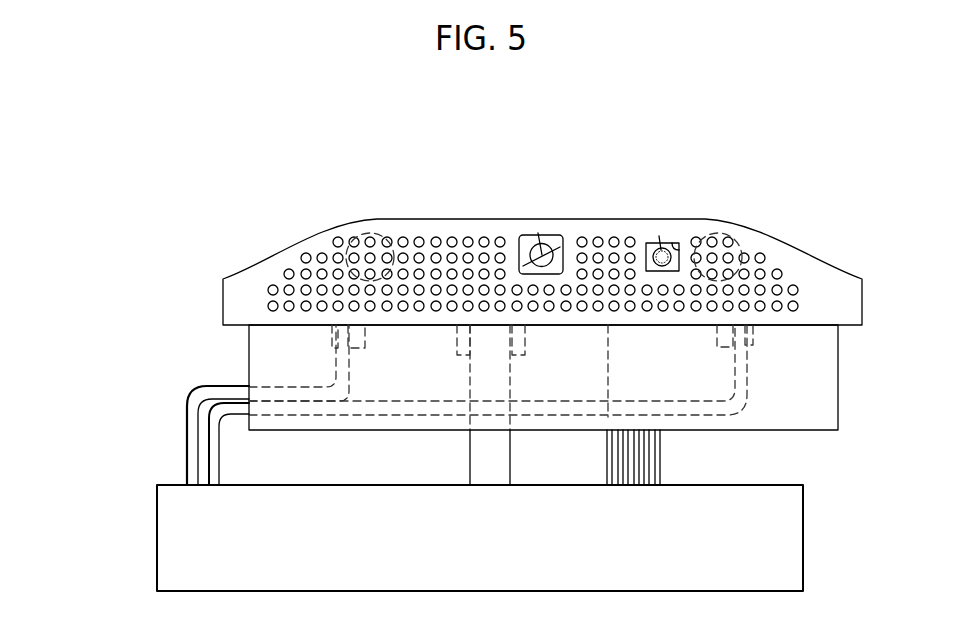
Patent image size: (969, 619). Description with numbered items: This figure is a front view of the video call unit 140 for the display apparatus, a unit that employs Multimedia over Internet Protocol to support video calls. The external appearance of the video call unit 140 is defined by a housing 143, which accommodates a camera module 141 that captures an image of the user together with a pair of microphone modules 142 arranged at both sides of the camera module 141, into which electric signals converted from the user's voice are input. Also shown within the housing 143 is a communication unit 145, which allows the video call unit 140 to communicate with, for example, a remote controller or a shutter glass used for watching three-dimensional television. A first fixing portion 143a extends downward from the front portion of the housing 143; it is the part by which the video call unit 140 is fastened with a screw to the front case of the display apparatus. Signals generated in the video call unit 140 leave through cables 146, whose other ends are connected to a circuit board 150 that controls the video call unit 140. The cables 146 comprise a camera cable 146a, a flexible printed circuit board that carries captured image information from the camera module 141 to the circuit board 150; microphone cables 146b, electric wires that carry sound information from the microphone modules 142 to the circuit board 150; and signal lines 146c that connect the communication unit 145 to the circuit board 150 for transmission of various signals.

The video call unit 140 is at (418, 208).
The camera module 141 is at (538, 233).
The microphone modules 142 is at (362, 225).
The housing 143 is at (812, 267).
The first fixing portion 143a is at (835, 382).
The communication unit 145 is at (659, 236).
The cables 146 is at (80, 385).
The camera cable 146a is at (480, 441).
The microphone cables 146b is at (192, 450).
The signal lines 146c is at (628, 468).
The circuit board 150 is at (798, 527).